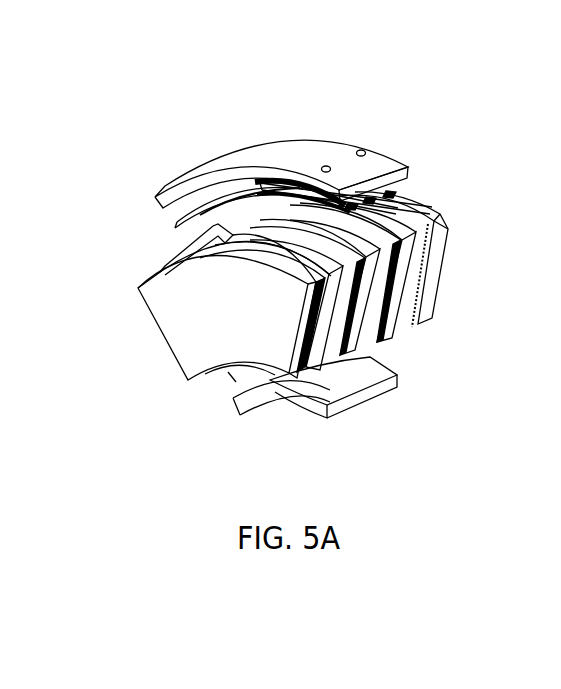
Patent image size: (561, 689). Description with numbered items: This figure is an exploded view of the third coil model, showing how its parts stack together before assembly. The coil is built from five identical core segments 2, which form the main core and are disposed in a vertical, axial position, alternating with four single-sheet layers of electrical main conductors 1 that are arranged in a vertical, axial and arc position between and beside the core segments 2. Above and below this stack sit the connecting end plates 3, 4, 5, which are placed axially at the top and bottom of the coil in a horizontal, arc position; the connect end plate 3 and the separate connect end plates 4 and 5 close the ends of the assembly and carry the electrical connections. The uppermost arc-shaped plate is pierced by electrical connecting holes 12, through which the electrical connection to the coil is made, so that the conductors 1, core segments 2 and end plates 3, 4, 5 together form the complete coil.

The electrical main conductors 1 is at (165, 266).
The core segments 2 is at (165, 185).
The connect end plate 3 is at (240, 372).
The separate connect end plate 4 is at (175, 227).
The separate connect end plate 5 is at (390, 205).
The electrical connecting holes 12 is at (363, 152).